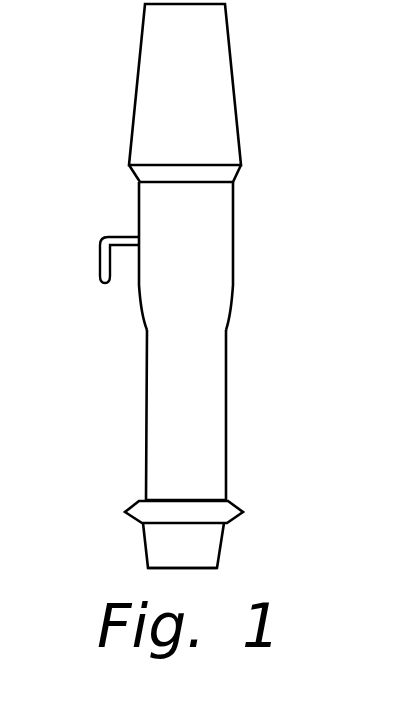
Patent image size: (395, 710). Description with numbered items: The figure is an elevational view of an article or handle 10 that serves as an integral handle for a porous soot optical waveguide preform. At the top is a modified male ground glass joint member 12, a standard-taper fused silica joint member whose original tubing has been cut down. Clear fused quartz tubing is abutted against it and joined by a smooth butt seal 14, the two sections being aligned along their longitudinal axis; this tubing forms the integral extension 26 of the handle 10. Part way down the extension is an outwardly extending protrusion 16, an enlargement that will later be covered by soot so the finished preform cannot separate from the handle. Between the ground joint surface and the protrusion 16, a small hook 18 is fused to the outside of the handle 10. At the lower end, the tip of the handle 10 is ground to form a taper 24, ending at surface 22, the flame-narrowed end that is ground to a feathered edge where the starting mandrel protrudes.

The handle 10 is at (146, 410).
The modified male ground glass joint member 12 is at (233, 218).
The butt seal 14 is at (231, 295).
The outwardly extending protrusion 16 is at (240, 512).
The hook 18 is at (100, 258).
The surface 22 is at (200, 568).
The taper 24 is at (225, 542).
The integral extension 26 is at (226, 411).